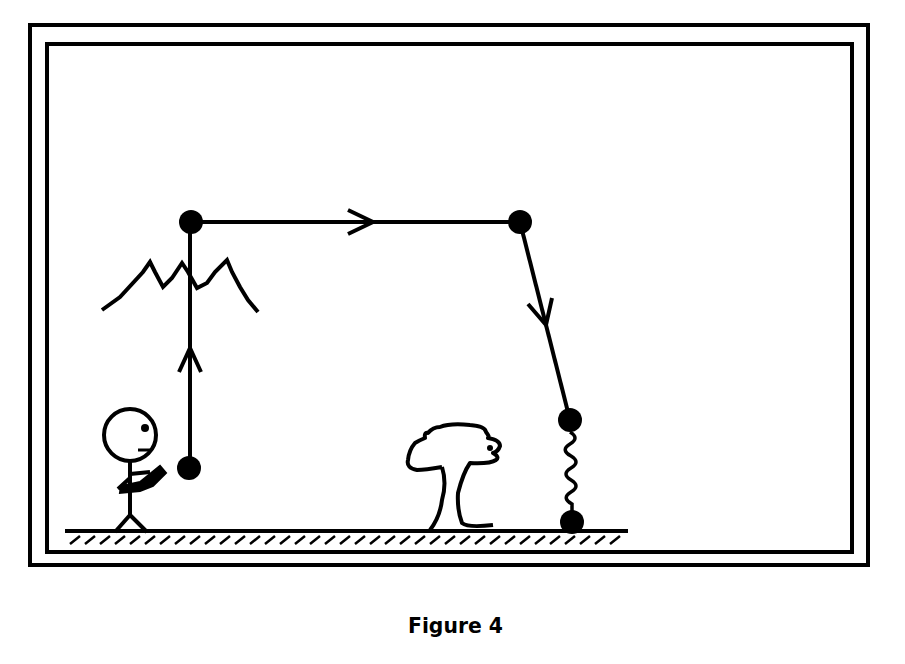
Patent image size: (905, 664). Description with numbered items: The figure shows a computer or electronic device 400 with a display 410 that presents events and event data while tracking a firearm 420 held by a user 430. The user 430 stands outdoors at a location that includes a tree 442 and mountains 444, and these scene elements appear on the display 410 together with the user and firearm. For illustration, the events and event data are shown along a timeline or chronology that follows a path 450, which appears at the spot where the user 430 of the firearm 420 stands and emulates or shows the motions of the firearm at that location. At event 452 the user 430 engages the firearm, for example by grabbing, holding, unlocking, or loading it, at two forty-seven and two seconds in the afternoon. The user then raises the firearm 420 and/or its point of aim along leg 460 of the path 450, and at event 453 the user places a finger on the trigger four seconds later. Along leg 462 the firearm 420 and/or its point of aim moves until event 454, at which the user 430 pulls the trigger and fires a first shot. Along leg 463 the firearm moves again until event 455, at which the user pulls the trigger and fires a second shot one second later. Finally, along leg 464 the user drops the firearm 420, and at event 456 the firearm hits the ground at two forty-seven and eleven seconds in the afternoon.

The electronic device 400 is at (867, 97).
The display 410 is at (815, 87).
The firearm 420 is at (130, 492).
The user 430 is at (108, 420).
The tree 442 is at (453, 425).
The mountains 444 is at (243, 280).
The path 450 is at (657, 208).
The event 452 is at (193, 458).
The event 453 is at (182, 225).
The event 454 is at (528, 230).
The event 455 is at (557, 418).
The event 456 is at (560, 523).
The leg 460 is at (188, 327).
The leg 462 is at (282, 220).
The leg 463 is at (535, 272).
The leg 464 is at (577, 467).